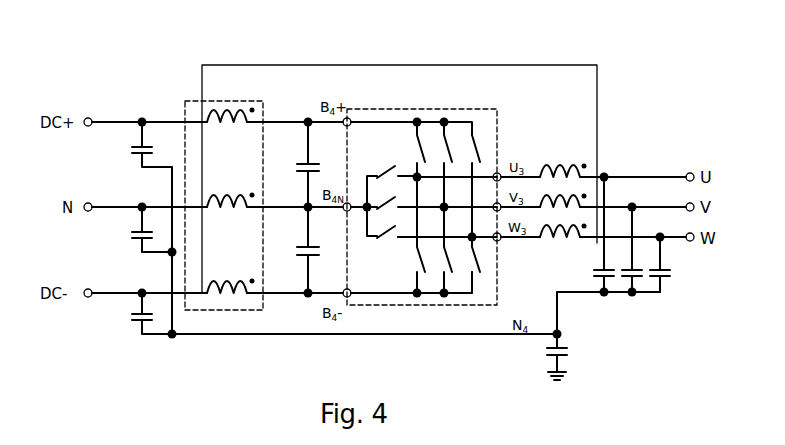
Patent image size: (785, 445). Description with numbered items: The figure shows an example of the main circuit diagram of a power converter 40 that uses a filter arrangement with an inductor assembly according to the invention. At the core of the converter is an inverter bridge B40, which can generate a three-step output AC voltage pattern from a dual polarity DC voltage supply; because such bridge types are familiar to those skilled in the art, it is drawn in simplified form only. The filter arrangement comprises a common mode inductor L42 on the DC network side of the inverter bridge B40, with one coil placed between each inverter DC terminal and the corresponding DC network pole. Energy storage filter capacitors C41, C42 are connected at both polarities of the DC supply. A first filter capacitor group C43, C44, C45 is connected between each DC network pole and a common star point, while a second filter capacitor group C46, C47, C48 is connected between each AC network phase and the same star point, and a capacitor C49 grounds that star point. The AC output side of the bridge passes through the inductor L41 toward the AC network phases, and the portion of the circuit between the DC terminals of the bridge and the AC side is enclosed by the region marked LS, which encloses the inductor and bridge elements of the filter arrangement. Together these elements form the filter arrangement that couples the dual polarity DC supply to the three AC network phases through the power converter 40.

The power converter 40 is at (658, 90).
The line side filter / LCL stage LS is at (353, 62).
The common mode inductor L42 is at (224, 196).
The AC side inductors L41 is at (597, 194).
The inverter bridge B40 is at (458, 108).
The energy storage filter capacitor C41 is at (295, 164).
The energy storage filter capacitor C42 is at (295, 250).
The first filter capacitor group capacitor C43 is at (135, 228).
The first filter capacitor group capacitor C44 is at (135, 313).
The first filter capacitor group capacitor C45 is at (135, 229).
The second filter capacitor group capacitor C46 is at (607, 258).
The second filter capacitor group capacitor C47 is at (646, 272).
The second filter capacitor group capacitor C48 is at (686, 276).
The grounding capacitor C49 is at (537, 357).